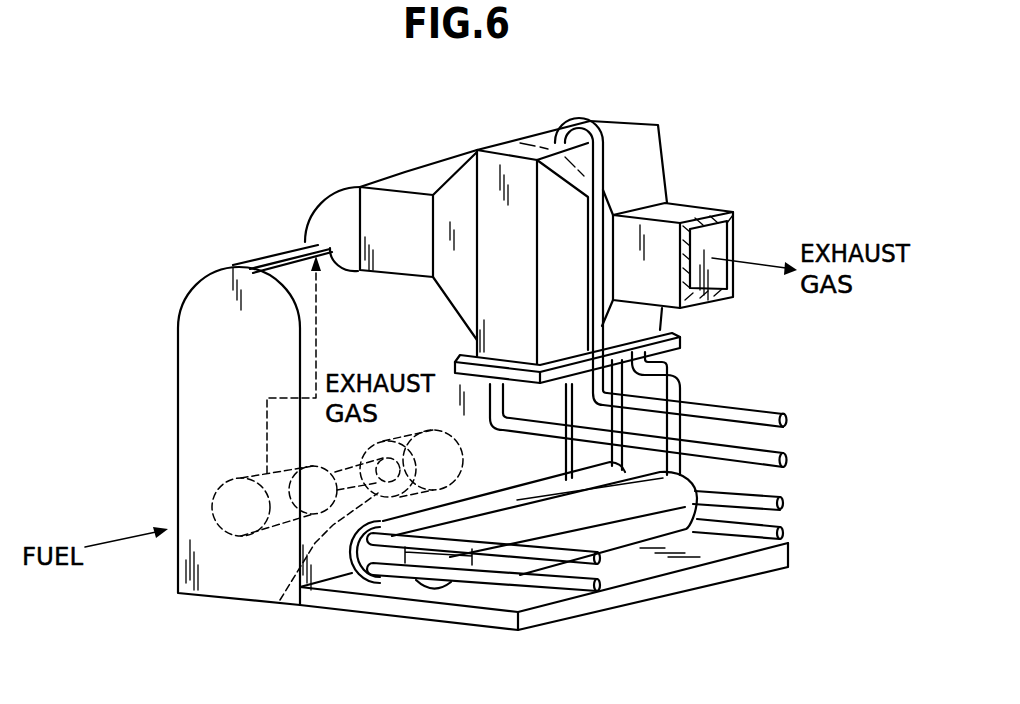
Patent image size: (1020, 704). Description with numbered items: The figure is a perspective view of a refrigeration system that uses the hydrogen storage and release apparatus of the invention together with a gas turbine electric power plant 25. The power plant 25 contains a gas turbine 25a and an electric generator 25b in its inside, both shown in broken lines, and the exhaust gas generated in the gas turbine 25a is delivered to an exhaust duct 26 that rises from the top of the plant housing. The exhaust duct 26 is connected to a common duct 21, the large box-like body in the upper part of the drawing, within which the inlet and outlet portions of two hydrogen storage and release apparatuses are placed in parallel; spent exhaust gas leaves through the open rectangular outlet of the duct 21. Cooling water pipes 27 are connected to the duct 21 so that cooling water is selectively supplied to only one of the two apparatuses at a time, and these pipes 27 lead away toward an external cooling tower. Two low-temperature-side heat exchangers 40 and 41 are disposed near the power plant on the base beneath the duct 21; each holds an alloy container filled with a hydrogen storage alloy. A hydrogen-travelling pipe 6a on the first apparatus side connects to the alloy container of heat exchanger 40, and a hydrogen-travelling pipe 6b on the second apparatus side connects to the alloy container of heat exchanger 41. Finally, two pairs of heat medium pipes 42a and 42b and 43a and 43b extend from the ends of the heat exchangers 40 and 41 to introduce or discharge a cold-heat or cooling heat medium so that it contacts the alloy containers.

The duct 21 is at (620, 118).
The gas turbine electric power plant 25 is at (218, 264).
The gas turbine 25a is at (243, 507).
The electric generator 25b is at (280, 600).
The exhaust duct 26 is at (342, 186).
The hydrogen-travelling pipe 6a is at (650, 357).
The hydrogen-travelling pipe 6b is at (690, 378).
The cooling water pipes 27 is at (785, 414).
The low-temperature-side heat exchanger 40 is at (366, 558).
The low-temperature-side heat exchanger 41 is at (438, 592).
The heat medium pipe 42a is at (600, 566).
The heat medium pipe 42b is at (600, 592).
The heat medium pipe 43a is at (790, 500).
The heat medium pipe 43b is at (790, 533).